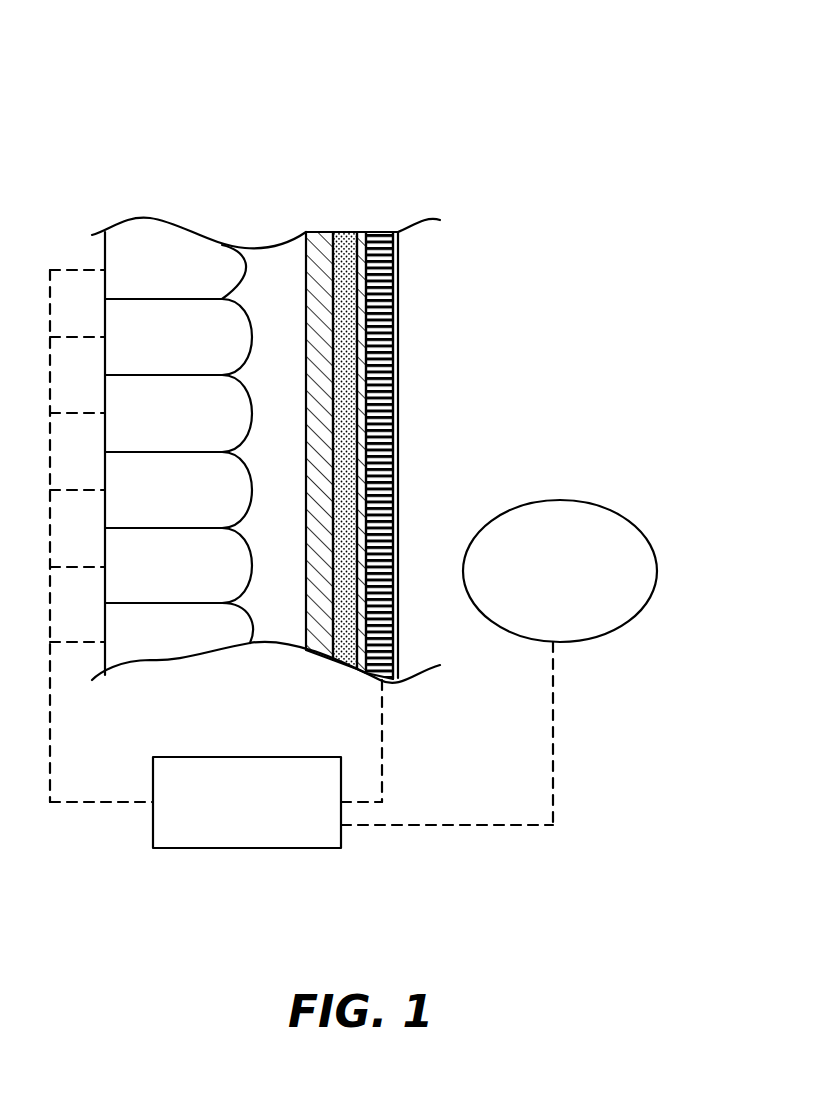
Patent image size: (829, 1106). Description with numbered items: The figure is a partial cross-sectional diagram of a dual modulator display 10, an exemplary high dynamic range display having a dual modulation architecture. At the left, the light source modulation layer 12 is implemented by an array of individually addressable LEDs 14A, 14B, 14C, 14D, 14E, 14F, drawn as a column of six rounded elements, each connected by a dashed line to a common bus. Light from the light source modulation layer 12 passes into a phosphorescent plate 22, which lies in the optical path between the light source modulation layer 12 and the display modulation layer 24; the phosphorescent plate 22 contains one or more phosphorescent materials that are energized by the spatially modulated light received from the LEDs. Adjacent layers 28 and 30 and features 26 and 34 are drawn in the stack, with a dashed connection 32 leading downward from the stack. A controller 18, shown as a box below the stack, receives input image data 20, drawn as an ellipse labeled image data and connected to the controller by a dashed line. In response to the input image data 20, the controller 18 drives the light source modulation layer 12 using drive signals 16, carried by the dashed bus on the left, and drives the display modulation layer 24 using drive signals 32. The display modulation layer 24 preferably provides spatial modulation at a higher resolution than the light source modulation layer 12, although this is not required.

The dual modulator display 10 is at (324, 125).
The light source modulation layer 12 is at (148, 198).
The LED 14A is at (175, 272).
The LED 14B is at (178, 337).
The LED 14C is at (178, 413).
The LED 14D is at (178, 490).
The LED 14E is at (178, 565).
The LED 14F is at (179, 629).
The drive signals 16 is at (85, 802).
The controller 18 is at (341, 848).
The input image data 20 is at (583, 520).
The phosphorescent plate 22 is at (340, 243).
The display modulation layer 24 is at (380, 215).
The nozzle 26 is at (395, 258).
The ink chamber layer 28 is at (310, 258).
The nozzle plate 30 is at (360, 232).
The drive signals 32 is at (383, 765).
The nozzle face 34 is at (395, 425).